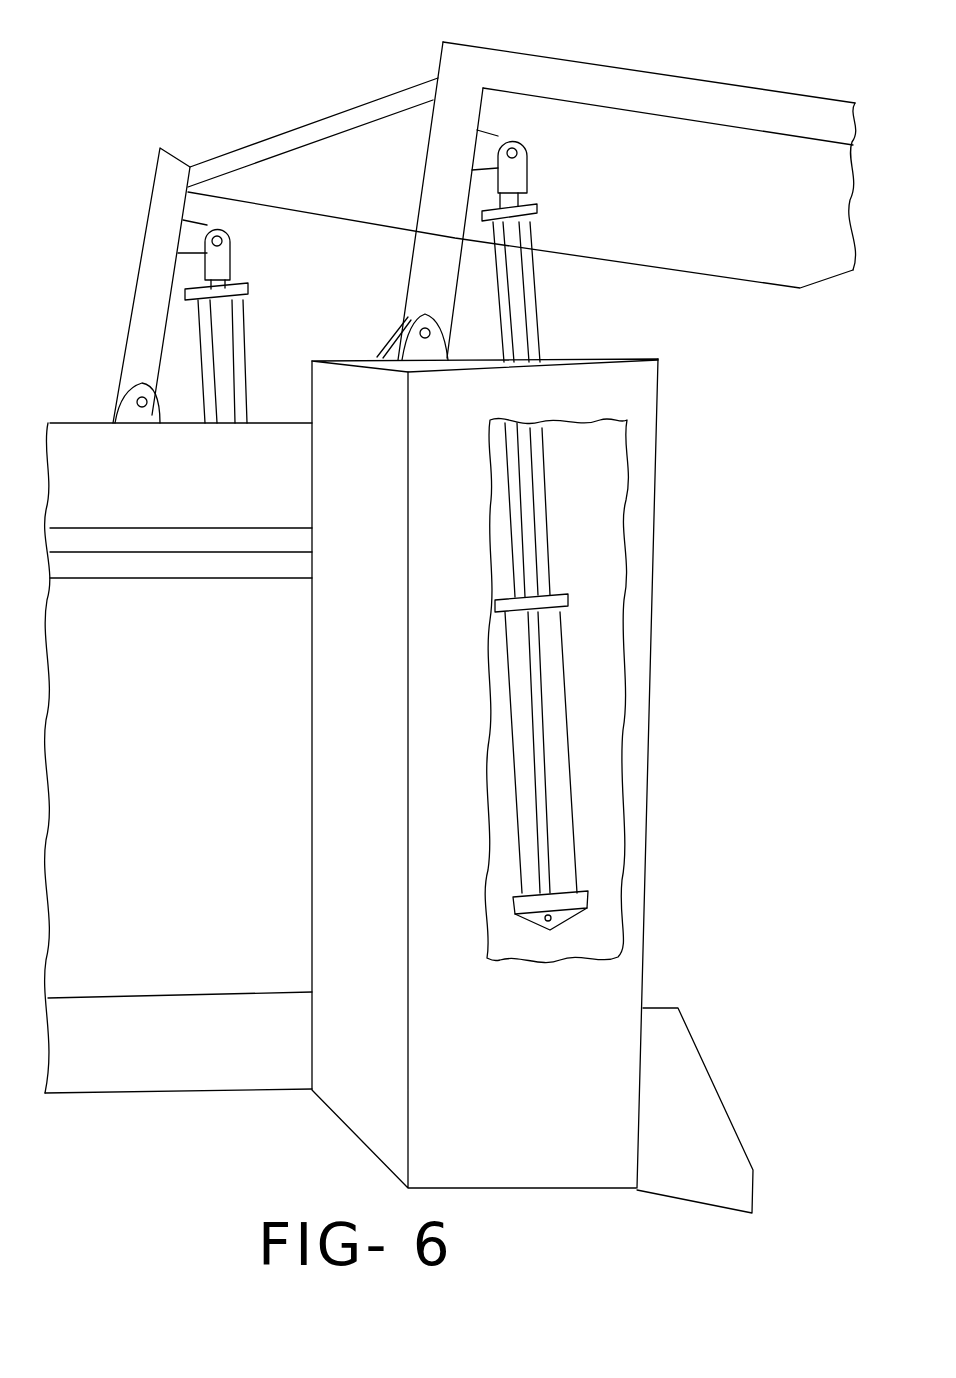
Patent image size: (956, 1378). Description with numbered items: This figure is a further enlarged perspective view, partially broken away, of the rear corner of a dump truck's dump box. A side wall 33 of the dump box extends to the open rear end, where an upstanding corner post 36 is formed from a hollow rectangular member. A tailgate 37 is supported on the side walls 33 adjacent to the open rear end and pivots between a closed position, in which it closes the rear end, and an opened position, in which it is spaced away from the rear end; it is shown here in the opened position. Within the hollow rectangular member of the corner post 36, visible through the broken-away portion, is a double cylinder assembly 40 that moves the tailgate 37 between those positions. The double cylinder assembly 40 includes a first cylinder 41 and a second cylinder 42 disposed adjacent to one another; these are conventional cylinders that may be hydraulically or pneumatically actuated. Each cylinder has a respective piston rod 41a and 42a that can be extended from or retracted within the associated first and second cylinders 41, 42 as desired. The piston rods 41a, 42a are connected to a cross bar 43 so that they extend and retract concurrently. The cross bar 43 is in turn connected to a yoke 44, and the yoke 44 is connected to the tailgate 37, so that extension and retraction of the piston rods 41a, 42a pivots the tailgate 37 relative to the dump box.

The side wall 33 is at (147, 838).
The corner post 36 is at (540, 1103).
The tailgate 37 is at (680, 160).
The double cylinder assembly 40 is at (570, 569).
The first cylinder 41 is at (550, 708).
The piston rod 41a is at (538, 478).
The second cylinder 42 is at (522, 740).
The piston rod 42a is at (518, 465).
The cross bar 43 is at (537, 211).
The yoke 44 is at (515, 172).